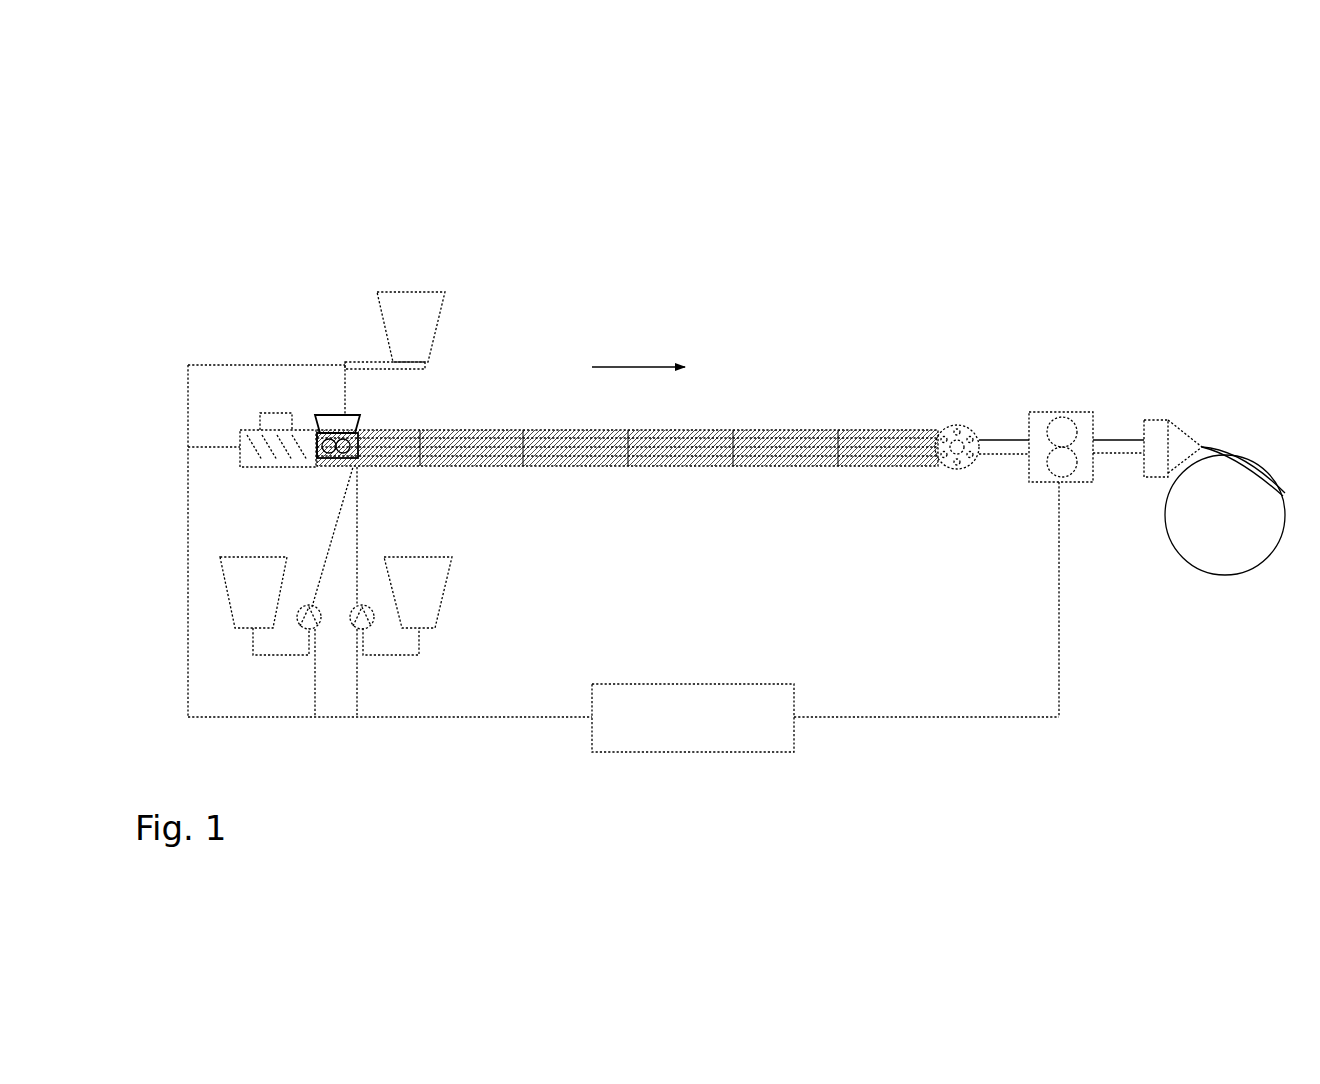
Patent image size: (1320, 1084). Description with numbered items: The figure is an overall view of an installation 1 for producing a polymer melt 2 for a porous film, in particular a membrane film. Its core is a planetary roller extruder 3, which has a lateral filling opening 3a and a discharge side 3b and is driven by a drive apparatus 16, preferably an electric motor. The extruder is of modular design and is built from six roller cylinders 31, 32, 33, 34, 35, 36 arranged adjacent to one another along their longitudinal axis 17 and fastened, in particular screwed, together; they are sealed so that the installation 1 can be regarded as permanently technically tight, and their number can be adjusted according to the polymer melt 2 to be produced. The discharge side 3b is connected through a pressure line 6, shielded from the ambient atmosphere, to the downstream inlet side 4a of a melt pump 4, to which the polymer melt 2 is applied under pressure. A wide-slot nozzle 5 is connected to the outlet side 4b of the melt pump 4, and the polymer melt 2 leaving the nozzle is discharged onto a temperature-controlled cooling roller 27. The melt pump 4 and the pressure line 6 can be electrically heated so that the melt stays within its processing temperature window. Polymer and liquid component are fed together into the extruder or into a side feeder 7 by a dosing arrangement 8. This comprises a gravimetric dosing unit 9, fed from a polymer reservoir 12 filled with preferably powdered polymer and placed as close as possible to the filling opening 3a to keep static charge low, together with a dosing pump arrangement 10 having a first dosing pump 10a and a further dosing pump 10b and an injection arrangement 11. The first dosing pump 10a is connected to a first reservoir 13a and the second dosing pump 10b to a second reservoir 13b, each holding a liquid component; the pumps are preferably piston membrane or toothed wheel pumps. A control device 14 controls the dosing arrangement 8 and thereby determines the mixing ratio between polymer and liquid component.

The installation 1 is at (162, 241).
The polymer melt 2 is at (1215, 450).
The planetary roller extruder 3 is at (793, 388).
The filling opening 3a is at (358, 437).
The discharge side 3b is at (957, 425).
The roller cylinder 31 is at (410, 465).
The roller cylinder 32 is at (498, 465).
The roller cylinder 33 is at (590, 465).
The roller cylinder 34 is at (695, 465).
The roller cylinder 35 is at (795, 465).
The roller cylinder 36 is at (875, 462).
The melt pump 4 is at (1062, 412).
The inlet side 4a is at (1030, 456).
The outlet side 4b is at (1094, 440).
The wide-slot nozzle 5 is at (1158, 425).
The pressure line 6 is at (1005, 452).
The side feeder 7 is at (316, 414).
The dosing arrangement 8 is at (333, 326).
The gravimetric dosing unit 9 is at (425, 365).
The dosing pump arrangement 10 is at (356, 574).
The first dosing pump 10a is at (305, 606).
The second dosing pump 10b is at (366, 606).
The injection arrangement 11 is at (364, 471).
The polymer reservoir 12 is at (425, 322).
The first reservoir 13a is at (235, 613).
The second reservoir 13b is at (438, 606).
The control device 14 is at (693, 684).
The drive apparatus 16 is at (285, 465).
The longitudinal axis 17 is at (635, 367).
The cooling roller 27 is at (1222, 566).